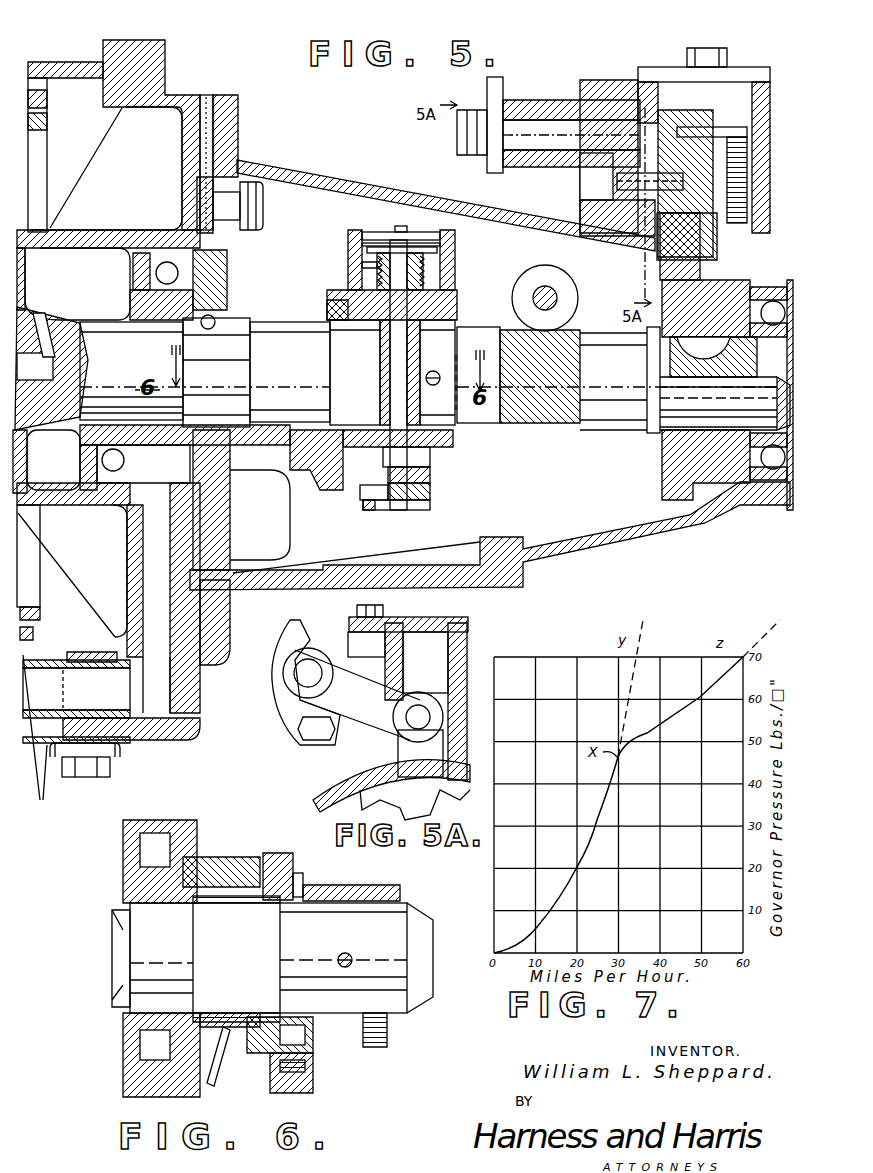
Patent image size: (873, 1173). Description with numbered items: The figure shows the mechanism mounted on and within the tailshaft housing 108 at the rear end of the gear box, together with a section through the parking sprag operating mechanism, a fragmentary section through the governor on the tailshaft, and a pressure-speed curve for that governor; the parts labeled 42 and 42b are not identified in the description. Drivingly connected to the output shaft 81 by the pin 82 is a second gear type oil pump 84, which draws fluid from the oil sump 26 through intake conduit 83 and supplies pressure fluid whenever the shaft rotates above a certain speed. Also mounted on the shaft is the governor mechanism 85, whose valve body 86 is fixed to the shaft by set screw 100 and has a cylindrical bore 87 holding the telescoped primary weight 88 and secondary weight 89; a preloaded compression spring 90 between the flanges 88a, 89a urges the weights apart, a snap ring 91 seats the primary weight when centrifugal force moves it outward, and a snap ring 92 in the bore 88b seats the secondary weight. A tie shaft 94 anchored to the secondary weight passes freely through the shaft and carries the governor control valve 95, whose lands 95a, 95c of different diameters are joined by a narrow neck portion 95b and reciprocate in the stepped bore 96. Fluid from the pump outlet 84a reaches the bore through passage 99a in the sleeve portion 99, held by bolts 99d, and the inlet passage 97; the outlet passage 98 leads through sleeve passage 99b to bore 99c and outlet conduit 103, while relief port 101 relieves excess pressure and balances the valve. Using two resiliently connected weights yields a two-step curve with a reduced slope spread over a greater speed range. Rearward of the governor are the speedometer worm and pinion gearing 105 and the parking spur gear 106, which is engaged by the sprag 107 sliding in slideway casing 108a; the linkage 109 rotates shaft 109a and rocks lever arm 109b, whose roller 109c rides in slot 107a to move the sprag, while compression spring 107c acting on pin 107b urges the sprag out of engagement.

In FIG. 5, the oil sump 26 is at (50, 797).
In FIG. 5, the transmission housing 42 is at (57, 64).
In FIG. 5, the housing wall 42b is at (68, 230).
In FIG. 5, the output shaft 81 is at (110, 318).
In FIG. 6, the output shaft 81 is at (412, 918).
In FIG. 5, the pin 82 is at (210, 330).
In FIG. 5, the intake conduit 83 is at (160, 672).
In FIG. 5, the second gear type oil pump 84 is at (222, 494).
In FIG. 6, the second gear type oil pump 84 is at (142, 861).
In FIG. 5, the outlet 84a is at (238, 285).
In FIG. 6, the outlet 84a is at (200, 860).
In FIG. 5, the governor mechanism 85 is at (334, 226).
In FIG. 5, the valve body 86 is at (445, 296).
In FIG. 6, the valve body 86 is at (380, 892).
In FIG. 5, the cylindrical bore 87 is at (378, 246).
In FIG. 5, the primary weight 88 is at (440, 274).
In FIG. 5, the radially directed flange 88a is at (448, 314).
In FIG. 5, the bore 88b is at (392, 372).
In FIG. 5, the secondary weight 89 is at (388, 255).
In FIG. 5, the radially directed flange 89a is at (445, 254).
In FIG. 5, the preloaded compression spring 90 is at (362, 266).
In FIG. 5, the snap ring 91 is at (436, 232).
In FIG. 5, the snap ring 92 is at (355, 246).
In FIG. 5, the tie shaft 94 is at (390, 372).
In FIG. 6, the tie shaft 94 is at (345, 952).
In FIG. 5, the governor control valve 95 is at (382, 512).
In FIG. 5, the land 95a is at (432, 458).
In FIG. 5, the narrow neck portion 95b is at (430, 476).
In FIG. 5, the land 95c is at (430, 495).
In FIG. 5, the stepped bore 96 is at (425, 510).
In FIG. 5, the pressure fluid inlet passage 97 is at (375, 420).
In FIG. 6, the pressure fluid inlet passage 97 is at (305, 880).
In FIG. 5, the outlet passage 98 is at (338, 480).
In FIG. 6, the outlet passage 98 is at (296, 1043).
In FIG. 6, the valve body sleeve portion 99 is at (278, 853).
In FIG. 6, the passage 99a is at (225, 908).
In FIG. 6, the sleeve passage 99b is at (270, 1012).
In FIG. 6, the bore 99c is at (205, 1012).
In FIG. 6, the bolts 99d is at (313, 1077).
In FIG. 5, the set screw 100 is at (462, 428).
In FIG. 6, the set screw 100 is at (385, 1047).
In FIG. 5, the relief port 101 is at (362, 495).
In FIG. 6, the outlet conduit 103 is at (212, 1088).
In FIG. 5, the speedometer worm and pinion gearing 105 is at (578, 283).
In FIG. 5, the parking spur gear 106 is at (662, 462).
In FIG. 5A, the parking spur gear 106 is at (391, 790).
In FIG. 5, the sprag 107 is at (650, 285).
In FIG. 5A, the sprag 107 is at (407, 716).
In FIG. 5, the slot 107a is at (690, 260).
In FIG. 5A, the slot 107a is at (420, 753).
In FIG. 5, the pin 107b is at (757, 125).
In FIG. 5, the compression spring 107c is at (747, 175).
In FIG. 5, the tailshaft housing 108 is at (538, 218).
In FIG. 5, the slideway casing 108a is at (660, 66).
In FIG. 5A, the slideway casing 108a is at (468, 628).
In FIG. 5, the linkage 109 is at (487, 84).
In FIG. 5A, the linkage 109 is at (308, 648).
In FIG. 5, the shaft 109a is at (555, 118).
In FIG. 5A, the shaft 109a is at (357, 695).
In FIG. 5, the lever arm 109b is at (624, 110).
In FIG. 5A, the lever arm 109b is at (407, 701).
In FIG. 5, the roller 109c is at (678, 136).
In FIG. 5A, the roller 109c is at (428, 703).